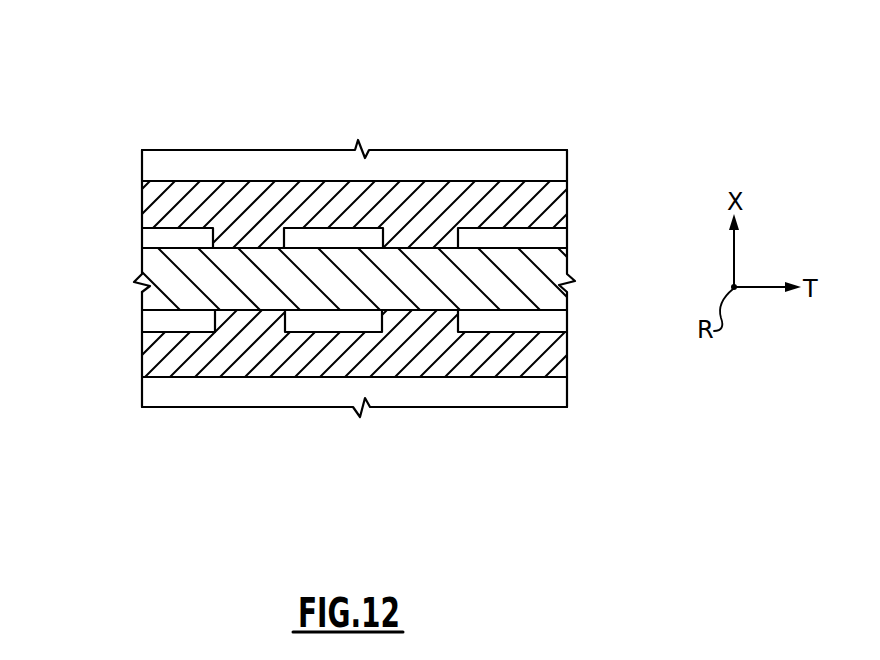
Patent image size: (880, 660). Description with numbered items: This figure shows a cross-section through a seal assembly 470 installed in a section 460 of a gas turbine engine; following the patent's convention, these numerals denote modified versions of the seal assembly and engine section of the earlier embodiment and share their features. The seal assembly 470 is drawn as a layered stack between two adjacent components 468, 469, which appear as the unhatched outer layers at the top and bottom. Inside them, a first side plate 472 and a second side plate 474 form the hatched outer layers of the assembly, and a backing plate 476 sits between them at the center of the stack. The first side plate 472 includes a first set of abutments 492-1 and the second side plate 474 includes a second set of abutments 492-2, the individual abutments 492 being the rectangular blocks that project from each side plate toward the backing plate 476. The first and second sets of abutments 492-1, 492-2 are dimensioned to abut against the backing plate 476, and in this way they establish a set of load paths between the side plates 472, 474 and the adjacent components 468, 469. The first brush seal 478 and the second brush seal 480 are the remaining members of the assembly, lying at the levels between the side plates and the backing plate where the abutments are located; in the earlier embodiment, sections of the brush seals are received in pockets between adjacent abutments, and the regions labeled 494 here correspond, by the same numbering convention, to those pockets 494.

The piezoelectric stack assembly 460 is at (146, 66).
The adjacent component 468 is at (563, 390).
The adjacent component 469 is at (548, 167).
The seal assembly 470 is at (116, 191).
The first side plate 472 is at (137, 377).
The second side plate 474 is at (155, 208).
The backing plate 476 is at (142, 300).
The first brush seal 478 is at (567, 322).
The second brush seal 480 is at (553, 235).
The abutment 492 is at (463, 237).
The first set of abutments 492-1 is at (134, 334).
The second set of abutments 492-2 is at (128, 247).
The pad recess 494 is at (330, 237).